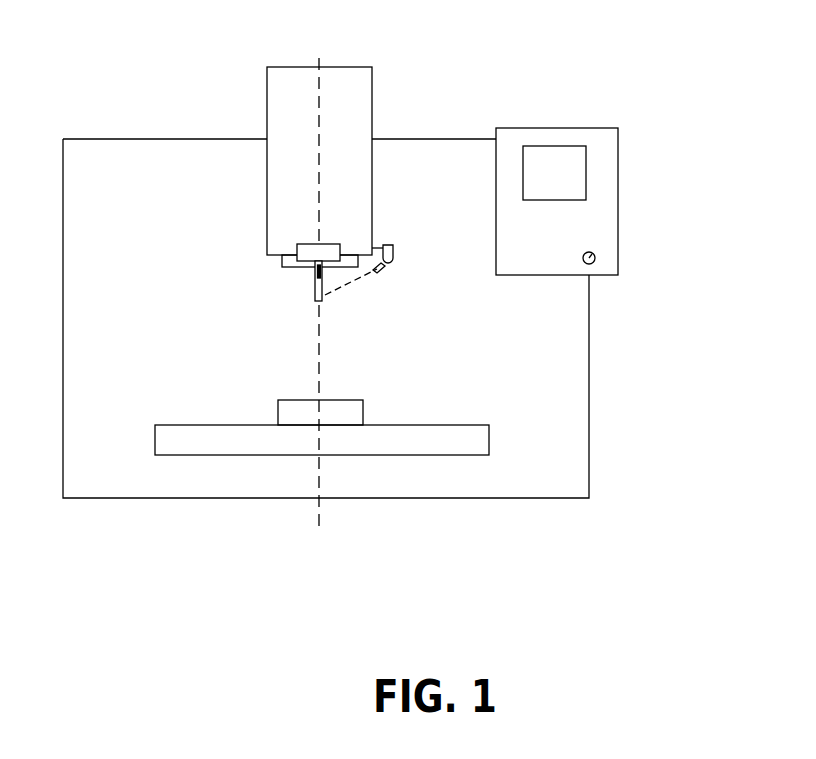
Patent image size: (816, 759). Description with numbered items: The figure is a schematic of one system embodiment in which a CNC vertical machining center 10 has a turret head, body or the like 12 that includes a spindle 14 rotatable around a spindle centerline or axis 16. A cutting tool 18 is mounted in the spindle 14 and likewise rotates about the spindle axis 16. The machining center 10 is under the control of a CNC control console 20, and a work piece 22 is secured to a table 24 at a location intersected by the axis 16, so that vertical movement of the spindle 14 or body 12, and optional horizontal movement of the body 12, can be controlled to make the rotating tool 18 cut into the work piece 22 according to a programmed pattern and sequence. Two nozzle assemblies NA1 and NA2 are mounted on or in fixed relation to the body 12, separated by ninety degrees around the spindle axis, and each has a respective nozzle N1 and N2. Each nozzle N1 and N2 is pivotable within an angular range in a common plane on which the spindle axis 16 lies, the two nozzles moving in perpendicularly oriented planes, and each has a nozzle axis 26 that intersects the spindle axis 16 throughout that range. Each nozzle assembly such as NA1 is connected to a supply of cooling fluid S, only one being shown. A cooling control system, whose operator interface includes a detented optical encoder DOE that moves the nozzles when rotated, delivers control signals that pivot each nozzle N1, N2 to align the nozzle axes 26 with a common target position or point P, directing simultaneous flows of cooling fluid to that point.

The CNC vertical machining center 10 is at (188, 139).
The turret head, body or the like 12 is at (267, 92).
The spindle 14 is at (293, 261).
The spindle centerline or axis 16 is at (320, 88).
The cutting tool 18 is at (320, 299).
The CNC control console 20 is at (577, 163).
The work piece 22 is at (342, 413).
The table 24 is at (353, 443).
The nozzle axis 26 is at (343, 287).
The supply of cooling fluid S is at (388, 247).
The nozzle N1 is at (382, 273).
The nozzle N2 is at (313, 271).
The nozzle assembly NA1 is at (395, 256).
The nozzle assembly NA2 is at (320, 258).
The common target position or point P is at (325, 295).
The detented optical encoder DOE is at (592, 253).